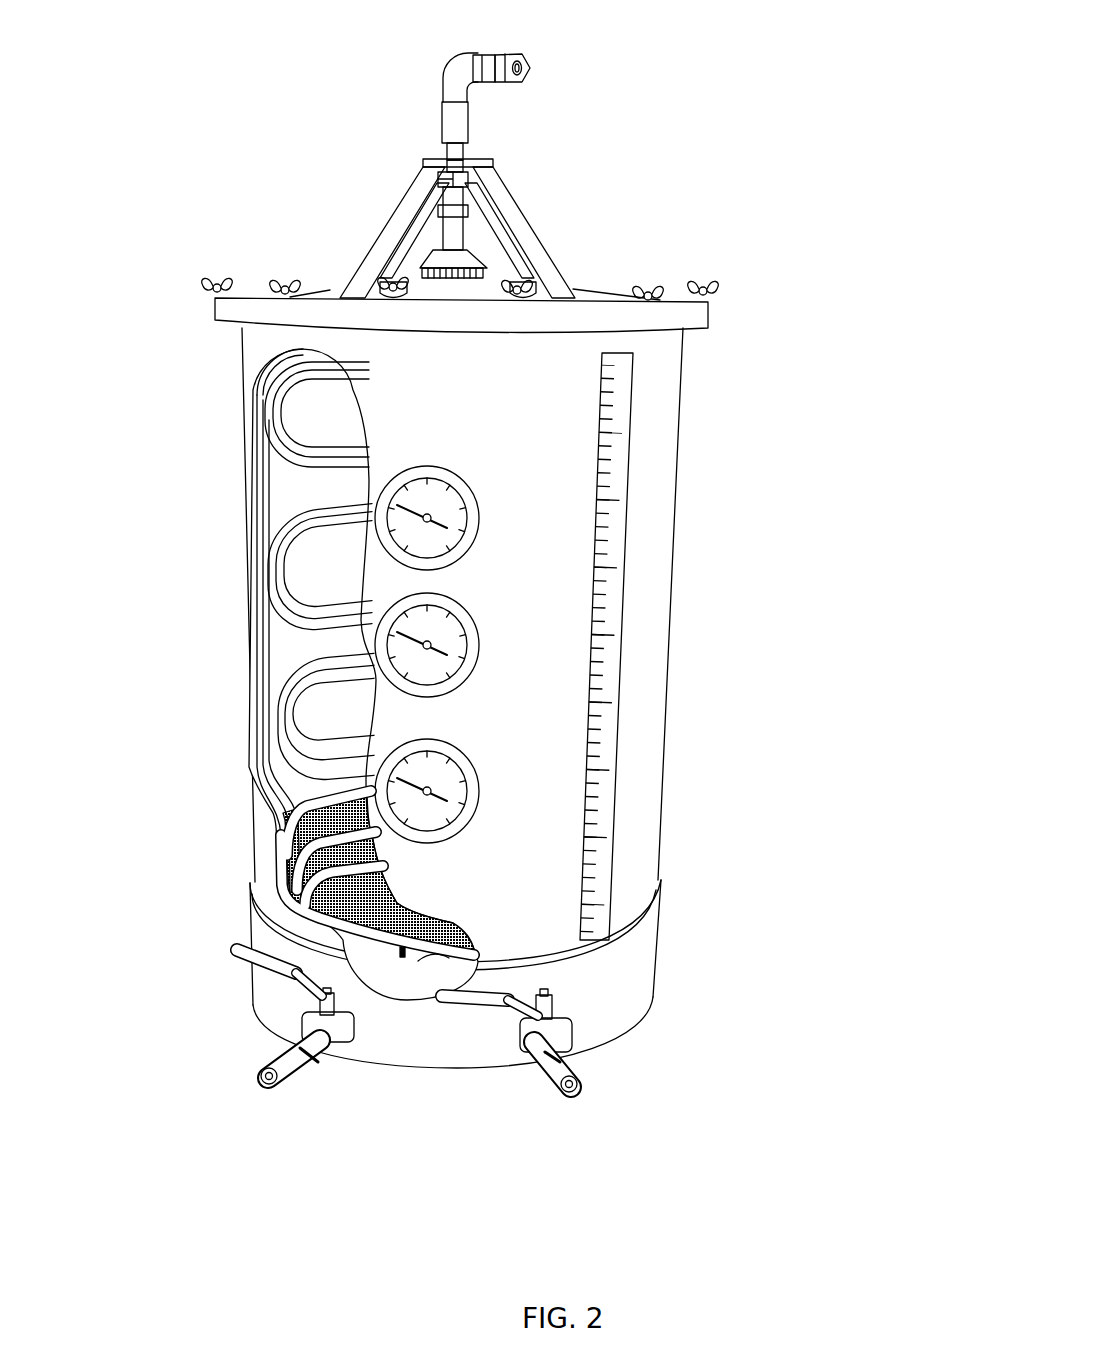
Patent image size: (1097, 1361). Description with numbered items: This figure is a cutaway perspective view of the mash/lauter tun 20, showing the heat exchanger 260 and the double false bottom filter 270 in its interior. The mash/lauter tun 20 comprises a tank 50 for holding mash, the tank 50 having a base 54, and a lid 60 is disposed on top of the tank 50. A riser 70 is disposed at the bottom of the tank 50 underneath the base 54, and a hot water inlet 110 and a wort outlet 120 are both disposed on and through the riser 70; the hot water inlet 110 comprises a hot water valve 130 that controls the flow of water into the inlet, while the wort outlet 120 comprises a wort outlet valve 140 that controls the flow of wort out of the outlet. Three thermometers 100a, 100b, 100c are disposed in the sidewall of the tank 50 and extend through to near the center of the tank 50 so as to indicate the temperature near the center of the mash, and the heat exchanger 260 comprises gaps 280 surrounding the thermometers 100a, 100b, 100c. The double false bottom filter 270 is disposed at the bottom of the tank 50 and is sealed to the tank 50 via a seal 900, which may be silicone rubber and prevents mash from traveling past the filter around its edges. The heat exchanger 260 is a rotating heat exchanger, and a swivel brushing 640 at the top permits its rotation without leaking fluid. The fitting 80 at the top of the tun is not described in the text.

The mash/lauter tun 20 is at (496, 634).
The tank 50 is at (663, 448).
The base 54 is at (433, 957).
The lid 60 is at (697, 315).
The riser 70 is at (637, 963).
The inlet pipe with elbow fitting 80 is at (413, 159).
The thermometer 100a is at (455, 515).
The thermometer 100b is at (455, 642).
The thermometer 100c is at (455, 790).
The hot water inlet 110 is at (219, 1037).
The wort outlet 120 is at (509, 1118).
The hot water valve 130 is at (240, 950).
The wort outlet valve 140 is at (500, 1015).
The heat exchanger 260 is at (308, 462).
The double false bottom filter 270 is at (393, 952).
The gaps 280 is at (308, 487).
The swivel brushing 640 is at (452, 180).
The seal 900 is at (283, 813).